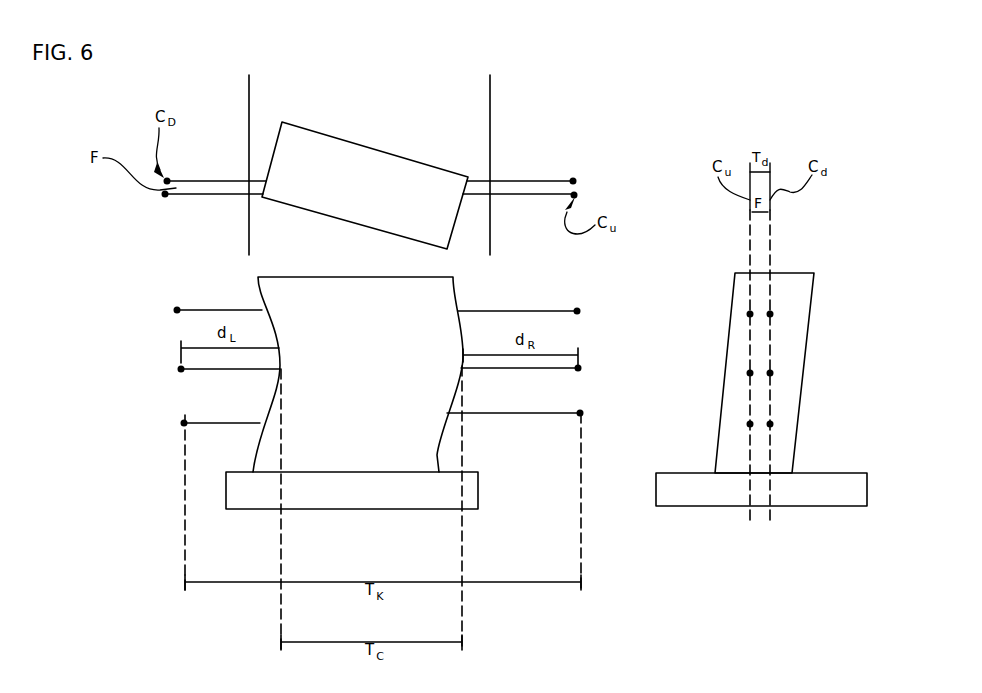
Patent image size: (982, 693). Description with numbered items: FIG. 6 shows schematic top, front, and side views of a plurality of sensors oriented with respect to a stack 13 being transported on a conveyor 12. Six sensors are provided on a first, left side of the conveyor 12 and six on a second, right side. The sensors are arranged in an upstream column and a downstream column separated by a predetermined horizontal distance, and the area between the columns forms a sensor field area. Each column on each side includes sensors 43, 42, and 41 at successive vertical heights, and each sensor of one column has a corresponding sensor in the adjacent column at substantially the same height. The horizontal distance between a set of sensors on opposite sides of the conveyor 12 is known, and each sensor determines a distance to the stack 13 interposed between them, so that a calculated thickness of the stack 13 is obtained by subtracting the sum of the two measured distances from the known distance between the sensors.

The conveyor 12 is at (490, 112).
The stack 13 is at (373, 188).
The sensor 41 is at (184, 423).
The sensor 42 is at (170, 351).
The sensor 43 is at (170, 177).